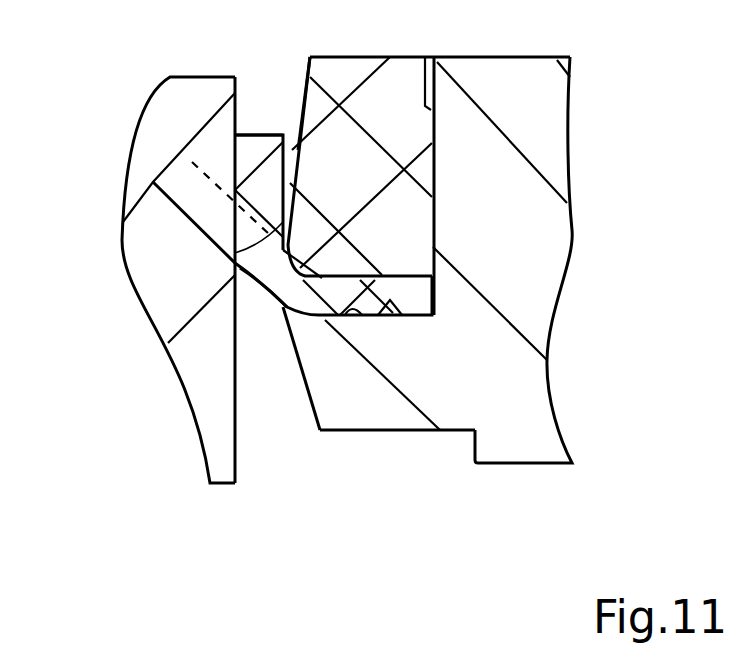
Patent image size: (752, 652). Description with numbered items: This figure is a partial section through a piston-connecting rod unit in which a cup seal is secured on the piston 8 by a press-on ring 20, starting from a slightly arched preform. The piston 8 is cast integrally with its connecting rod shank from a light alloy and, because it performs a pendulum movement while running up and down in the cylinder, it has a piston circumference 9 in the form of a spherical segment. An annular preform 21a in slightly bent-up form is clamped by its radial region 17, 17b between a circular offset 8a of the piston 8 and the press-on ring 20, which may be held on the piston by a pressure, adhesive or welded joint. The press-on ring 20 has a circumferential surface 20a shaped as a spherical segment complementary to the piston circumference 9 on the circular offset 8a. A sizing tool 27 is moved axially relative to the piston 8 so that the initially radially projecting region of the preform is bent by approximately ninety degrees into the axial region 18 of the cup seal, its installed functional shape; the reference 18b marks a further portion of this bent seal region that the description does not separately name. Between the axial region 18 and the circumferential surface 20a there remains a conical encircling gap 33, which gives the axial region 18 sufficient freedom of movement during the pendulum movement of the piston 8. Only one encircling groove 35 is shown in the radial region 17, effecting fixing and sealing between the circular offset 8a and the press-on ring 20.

The piston 8 is at (503, 445).
The circular offset 8a is at (360, 413).
The piston circumference 9 is at (299, 397).
The radial region 17 is at (395, 292).
The radial region of the preform 17b is at (353, 312).
The axial region 18 is at (250, 157).
The undeformed lip position 18b is at (208, 177).
The press-on ring 20 is at (410, 233).
The circumferential surface 20a is at (310, 62).
The annular preform 21a is at (262, 334).
The sizing tool 27 is at (165, 102).
The conical encircling gap 33 is at (283, 123).
The encircling groove 35 is at (393, 318).